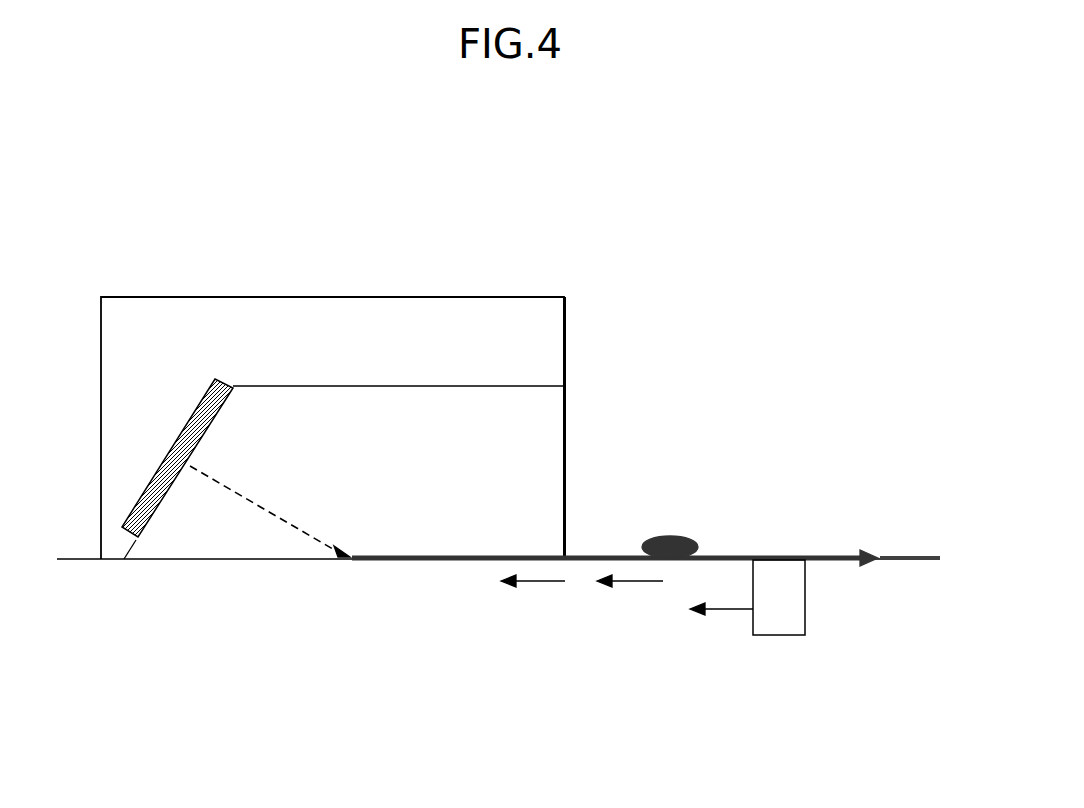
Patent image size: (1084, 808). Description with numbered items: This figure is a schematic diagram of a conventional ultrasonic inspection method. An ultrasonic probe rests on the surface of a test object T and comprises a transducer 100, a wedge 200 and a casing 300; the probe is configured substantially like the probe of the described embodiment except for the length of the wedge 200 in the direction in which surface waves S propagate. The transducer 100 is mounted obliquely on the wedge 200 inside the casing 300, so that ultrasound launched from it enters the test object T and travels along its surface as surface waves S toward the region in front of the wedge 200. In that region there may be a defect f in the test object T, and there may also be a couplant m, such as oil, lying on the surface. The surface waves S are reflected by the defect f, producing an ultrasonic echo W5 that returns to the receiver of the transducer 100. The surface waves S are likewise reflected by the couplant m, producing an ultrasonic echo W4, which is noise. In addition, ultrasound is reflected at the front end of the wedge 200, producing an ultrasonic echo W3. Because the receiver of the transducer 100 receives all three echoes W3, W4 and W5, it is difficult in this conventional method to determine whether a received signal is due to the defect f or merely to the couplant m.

The transducer 100 is at (192, 414).
The wedge 200 is at (380, 386).
The casing 300 is at (565, 325).
The surface waves S is at (840, 562).
The couplant m is at (672, 538).
The test object T is at (895, 553).
The defect f is at (775, 637).
The ultrasonic echo W3 is at (533, 593).
The ultrasonic echo W4 is at (630, 593).
The ultrasonic echo W5 is at (721, 622).